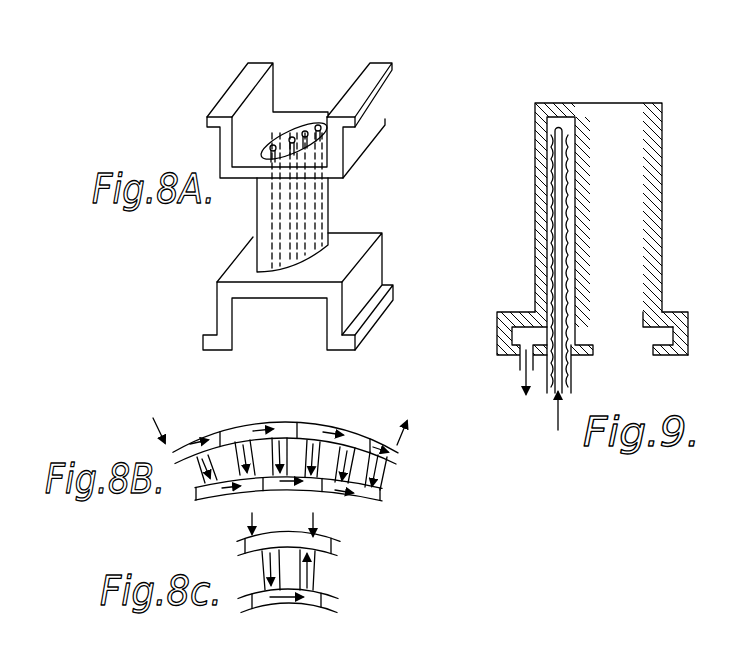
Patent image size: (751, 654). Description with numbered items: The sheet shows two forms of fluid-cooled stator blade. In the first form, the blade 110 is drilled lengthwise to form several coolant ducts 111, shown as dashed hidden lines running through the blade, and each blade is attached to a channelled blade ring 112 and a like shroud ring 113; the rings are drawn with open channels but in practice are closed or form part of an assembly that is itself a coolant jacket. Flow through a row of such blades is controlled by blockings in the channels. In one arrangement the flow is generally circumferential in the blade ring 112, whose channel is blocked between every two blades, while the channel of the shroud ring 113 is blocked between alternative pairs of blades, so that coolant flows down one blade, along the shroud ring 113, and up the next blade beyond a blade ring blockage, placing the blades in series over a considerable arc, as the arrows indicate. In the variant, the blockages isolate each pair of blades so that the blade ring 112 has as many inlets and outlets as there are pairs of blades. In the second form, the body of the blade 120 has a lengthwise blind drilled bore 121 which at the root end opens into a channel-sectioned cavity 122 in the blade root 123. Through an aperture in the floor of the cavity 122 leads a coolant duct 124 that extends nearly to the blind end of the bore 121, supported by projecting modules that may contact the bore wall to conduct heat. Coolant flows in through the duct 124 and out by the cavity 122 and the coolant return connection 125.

In FIG. 8A, the blade 110 is at (258, 214).
In FIG. 8A, the coolant ducts 111 is at (270, 208).
In FIG. 8A, the blade ring 112 is at (270, 88).
In FIG. 8B, the blade ring 112 is at (226, 425).
In FIG. 8C, the blade ring 112 is at (330, 542).
In FIG. 8A, the shroud ring 113 is at (238, 315).
In FIG. 8B, the shroud ring 113 is at (255, 488).
In FIG. 8C, the shroud ring 113 is at (327, 592).
In FIG. 9, the blade 120 is at (618, 105).
In FIG. 9, the blind drilled bore 121 is at (575, 327).
In FIG. 9, the cavity 122 is at (665, 333).
In FIG. 9, the blade root 123 is at (667, 312).
In FIG. 9, the coolant duct 124 is at (561, 382).
In FIG. 9, the coolant return connection 125 is at (516, 377).